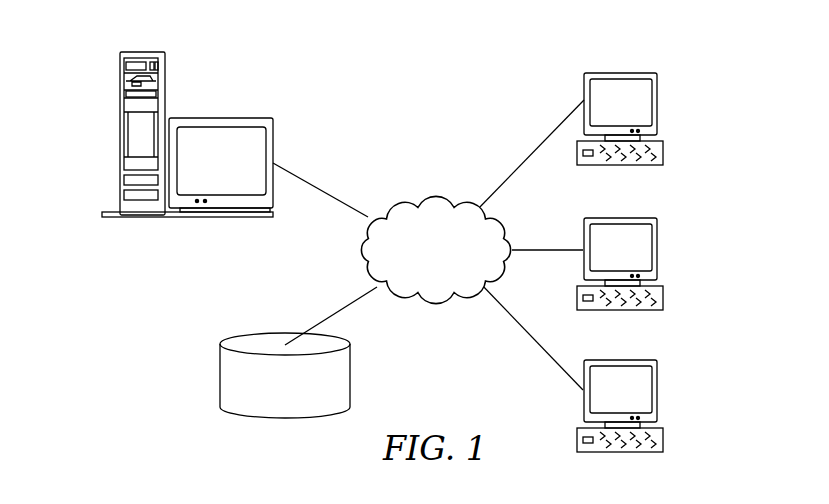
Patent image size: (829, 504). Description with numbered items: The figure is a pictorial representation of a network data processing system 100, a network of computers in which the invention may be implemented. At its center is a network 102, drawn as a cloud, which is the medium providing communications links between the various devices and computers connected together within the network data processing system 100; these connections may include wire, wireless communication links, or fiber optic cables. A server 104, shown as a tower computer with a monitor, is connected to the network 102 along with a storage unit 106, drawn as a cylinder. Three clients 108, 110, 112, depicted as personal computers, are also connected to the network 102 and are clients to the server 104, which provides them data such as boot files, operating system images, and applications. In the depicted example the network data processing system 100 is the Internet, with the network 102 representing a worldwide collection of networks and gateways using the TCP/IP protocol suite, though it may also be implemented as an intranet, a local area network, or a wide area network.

The network data processing system 100 is at (490, 81).
The network 102 is at (404, 204).
The server 104 is at (120, 135).
The storage unit 106 is at (220, 375).
The client 108 is at (658, 103).
The client 110 is at (657, 250).
The client 112 is at (657, 390).